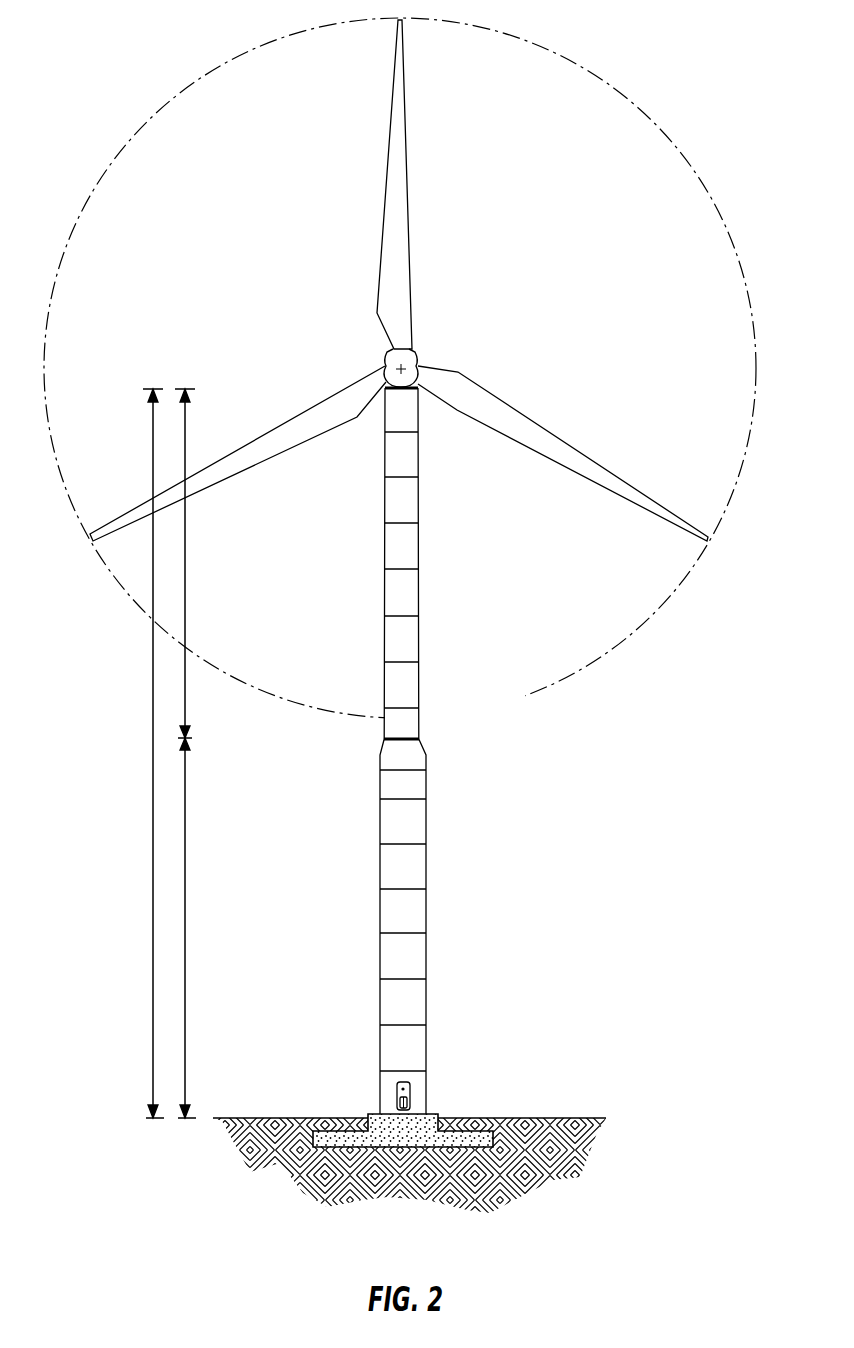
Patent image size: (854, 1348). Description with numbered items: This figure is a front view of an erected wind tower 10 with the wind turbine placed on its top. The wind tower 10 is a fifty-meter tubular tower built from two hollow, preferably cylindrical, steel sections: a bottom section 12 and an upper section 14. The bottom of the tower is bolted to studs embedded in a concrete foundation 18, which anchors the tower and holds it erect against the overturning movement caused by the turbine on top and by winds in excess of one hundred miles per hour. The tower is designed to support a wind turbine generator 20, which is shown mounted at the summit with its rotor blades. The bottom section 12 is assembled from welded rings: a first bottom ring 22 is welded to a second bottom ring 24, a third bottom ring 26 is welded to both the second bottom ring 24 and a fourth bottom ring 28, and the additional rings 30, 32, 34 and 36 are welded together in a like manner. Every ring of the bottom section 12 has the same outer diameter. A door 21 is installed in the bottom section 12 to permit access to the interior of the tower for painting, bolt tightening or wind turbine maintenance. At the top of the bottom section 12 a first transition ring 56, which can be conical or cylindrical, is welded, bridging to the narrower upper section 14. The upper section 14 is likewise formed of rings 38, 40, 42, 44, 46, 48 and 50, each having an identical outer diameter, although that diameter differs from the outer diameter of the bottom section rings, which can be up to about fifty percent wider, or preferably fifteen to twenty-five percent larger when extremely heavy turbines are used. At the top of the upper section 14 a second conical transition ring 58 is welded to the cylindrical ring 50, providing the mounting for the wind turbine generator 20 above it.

The wind tower 10 is at (153, 822).
The bottom section 12 is at (188, 900).
The upper section 14 is at (188, 537).
The concrete foundation 18 is at (362, 1118).
The wind turbine generator 20 is at (420, 352).
The door 21 is at (392, 1085).
The first bottom ring 22 is at (427, 1092).
The second bottom ring 24 is at (427, 1048).
The third bottom ring 26 is at (427, 1003).
The fourth bottom ring 28 is at (427, 958).
The additional bottom ring 30 is at (427, 913).
The additional bottom ring 32 is at (427, 867).
The additional bottom ring 34 is at (427, 820).
The additional bottom ring 36 is at (427, 785).
The bottom ring of upper section 38 is at (420, 723).
The upper section ring 40 is at (420, 686).
The upper section ring 42 is at (420, 640).
The upper section ring 44 is at (420, 593).
The upper section ring 46 is at (420, 547).
The upper section ring 48 is at (420, 500).
The cylindrical ring 50 is at (420, 453).
The first transition ring 56 is at (382, 757).
The second conical transition ring 58 is at (383, 405).